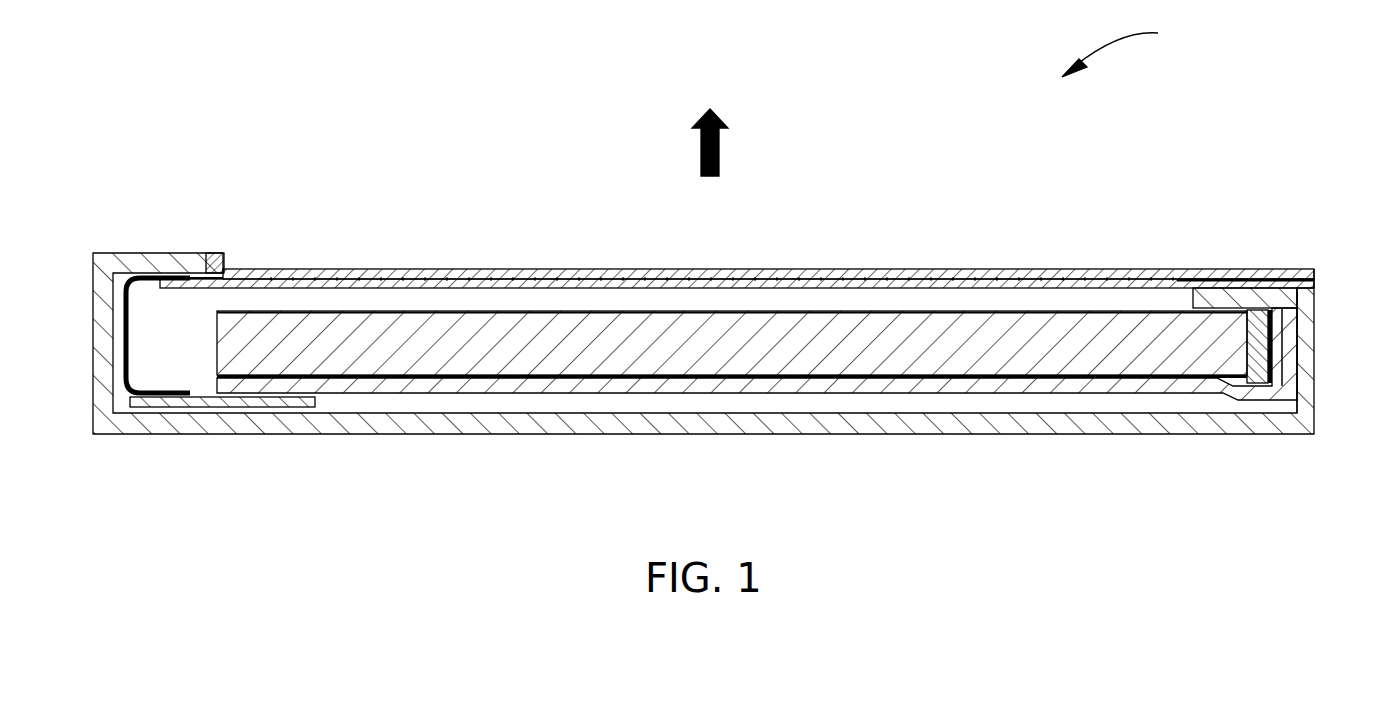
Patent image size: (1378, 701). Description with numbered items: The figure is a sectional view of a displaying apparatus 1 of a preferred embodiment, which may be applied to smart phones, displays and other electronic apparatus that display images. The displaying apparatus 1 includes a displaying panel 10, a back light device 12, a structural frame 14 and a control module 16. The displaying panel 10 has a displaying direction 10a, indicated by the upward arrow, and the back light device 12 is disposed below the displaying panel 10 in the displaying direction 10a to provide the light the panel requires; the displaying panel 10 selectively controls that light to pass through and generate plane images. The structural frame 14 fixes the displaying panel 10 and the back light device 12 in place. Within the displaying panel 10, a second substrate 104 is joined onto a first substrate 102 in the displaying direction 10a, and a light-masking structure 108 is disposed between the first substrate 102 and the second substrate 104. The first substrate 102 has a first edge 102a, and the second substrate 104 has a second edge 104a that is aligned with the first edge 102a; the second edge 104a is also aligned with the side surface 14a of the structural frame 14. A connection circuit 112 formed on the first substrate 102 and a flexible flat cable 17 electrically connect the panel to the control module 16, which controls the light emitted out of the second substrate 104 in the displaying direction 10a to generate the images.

The displaying apparatus 1 is at (1121, 51).
The displaying panel 10 is at (769, 269).
The displaying direction 10a is at (700, 150).
The first substrate 102 is at (978, 280).
The first edge 102a is at (1318, 292).
The second substrate 104 is at (1033, 272).
The second edge 104a is at (1318, 268).
The light-masking structure 108 is at (1232, 273).
The connection circuit 112 is at (210, 272).
The back light device 12 is at (1157, 400).
The structural frame 14 is at (729, 376).
The side surface 14a is at (1318, 370).
The control module 16 is at (201, 405).
The flexible flat cable 17 is at (127, 275).